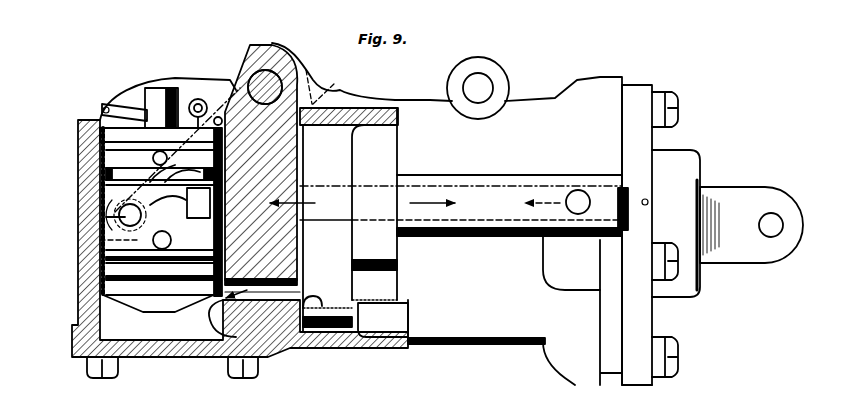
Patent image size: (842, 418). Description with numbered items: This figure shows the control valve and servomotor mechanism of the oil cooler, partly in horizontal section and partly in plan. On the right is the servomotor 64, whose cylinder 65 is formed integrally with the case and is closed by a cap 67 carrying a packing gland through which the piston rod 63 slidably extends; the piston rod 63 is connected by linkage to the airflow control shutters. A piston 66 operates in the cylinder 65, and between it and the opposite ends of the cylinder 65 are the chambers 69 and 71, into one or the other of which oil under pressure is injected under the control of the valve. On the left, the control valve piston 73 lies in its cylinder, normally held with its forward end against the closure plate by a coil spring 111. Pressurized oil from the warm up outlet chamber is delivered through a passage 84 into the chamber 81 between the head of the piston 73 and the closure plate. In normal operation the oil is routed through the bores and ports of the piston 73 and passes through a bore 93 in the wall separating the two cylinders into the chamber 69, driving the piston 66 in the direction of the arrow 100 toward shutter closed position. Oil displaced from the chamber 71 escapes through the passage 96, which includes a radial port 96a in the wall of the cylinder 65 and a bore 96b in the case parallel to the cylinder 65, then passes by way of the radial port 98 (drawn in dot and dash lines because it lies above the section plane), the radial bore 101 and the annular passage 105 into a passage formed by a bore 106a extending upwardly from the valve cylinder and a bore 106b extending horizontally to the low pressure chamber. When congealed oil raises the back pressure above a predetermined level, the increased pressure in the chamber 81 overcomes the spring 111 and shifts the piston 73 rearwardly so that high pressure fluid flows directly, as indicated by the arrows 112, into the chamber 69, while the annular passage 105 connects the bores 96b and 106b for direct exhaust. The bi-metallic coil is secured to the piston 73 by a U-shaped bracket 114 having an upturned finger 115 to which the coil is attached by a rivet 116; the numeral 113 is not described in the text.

The piston rod 63 is at (385, 248).
The servomotor 64 is at (702, 165).
The cylinder 65 is at (395, 333).
The piston 66 is at (345, 152).
The cap 67 is at (640, 112).
The chamber 69 is at (322, 330).
The chamber 71 is at (392, 309).
The control valve piston 73 is at (110, 296).
The chamber 81 is at (132, 326).
The passage 84 is at (336, 97).
The bore 93 is at (284, 342).
The passage 96 is at (126, 174).
The radial port 96a is at (579, 196).
The bore 96b is at (480, 240).
The radial port 98 is at (156, 154).
The arrow 100 is at (446, 240).
The radial bore 101 is at (152, 243).
The annular passage 105 is at (125, 186).
The bore 106a is at (226, 96).
The bore 106b is at (100, 241).
The coil spring 111 is at (117, 106).
The arrows 112 is at (328, 100).
The bore 113 is at (545, 203).
The U-shaped bracket 114 is at (100, 118).
The upturned finger 115 is at (198, 98).
The rivet 116 is at (218, 116).